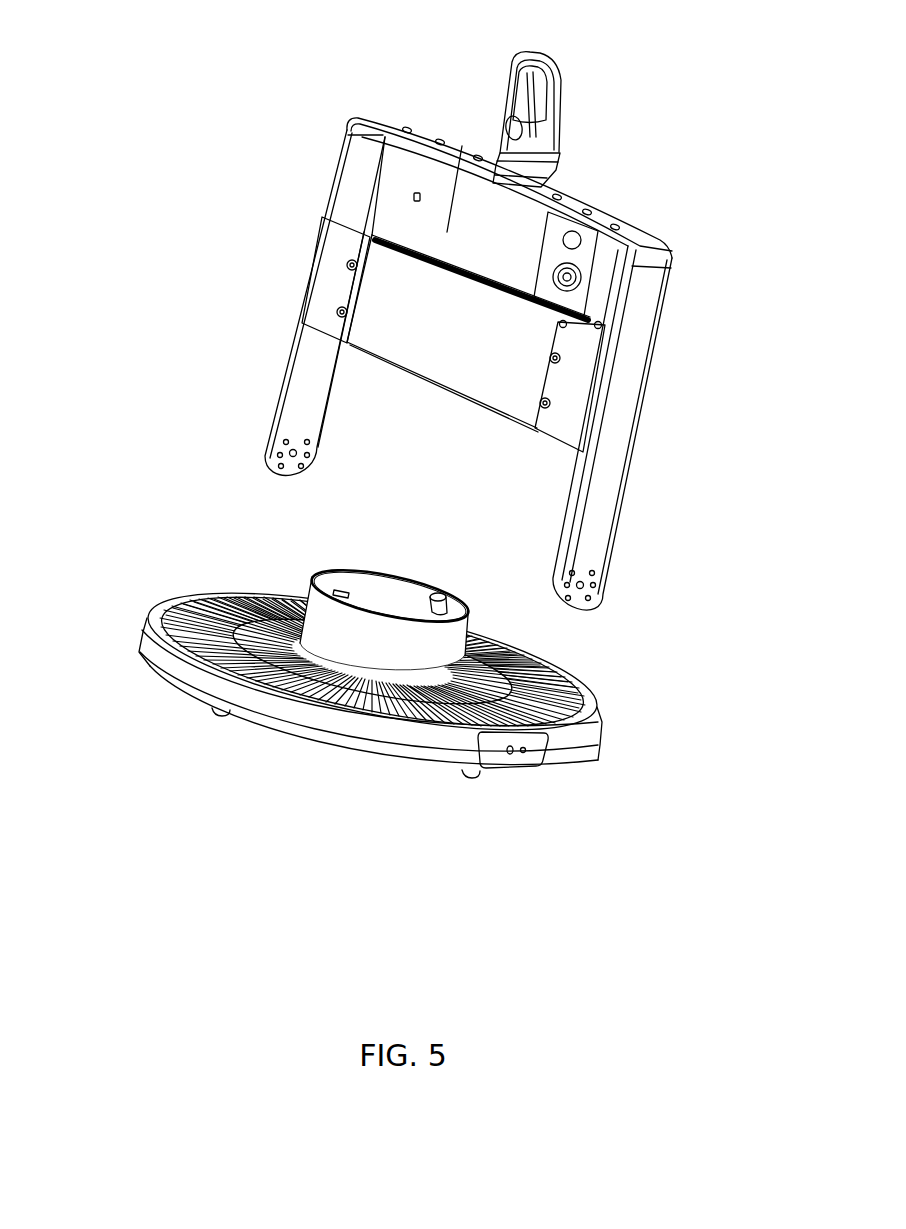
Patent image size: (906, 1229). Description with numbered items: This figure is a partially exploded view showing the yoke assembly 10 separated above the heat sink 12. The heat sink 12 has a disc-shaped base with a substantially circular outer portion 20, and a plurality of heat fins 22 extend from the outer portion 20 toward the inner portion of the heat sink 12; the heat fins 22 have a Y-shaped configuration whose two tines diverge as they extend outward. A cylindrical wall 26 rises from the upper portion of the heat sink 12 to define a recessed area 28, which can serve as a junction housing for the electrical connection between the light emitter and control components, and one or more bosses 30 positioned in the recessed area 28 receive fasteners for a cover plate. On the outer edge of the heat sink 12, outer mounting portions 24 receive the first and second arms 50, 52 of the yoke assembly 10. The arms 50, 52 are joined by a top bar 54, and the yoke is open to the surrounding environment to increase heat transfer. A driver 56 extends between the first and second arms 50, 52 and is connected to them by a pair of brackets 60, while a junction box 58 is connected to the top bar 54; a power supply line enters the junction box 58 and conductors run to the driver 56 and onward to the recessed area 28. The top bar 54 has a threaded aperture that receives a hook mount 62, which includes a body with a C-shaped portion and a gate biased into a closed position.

The yoke assembly 10 is at (303, 165).
The heat sink 12 is at (140, 673).
The outer portion 20 is at (145, 618).
The heat fins 22 is at (593, 700).
The outer mounting portions 24 is at (484, 758).
The cylindrical wall 26 is at (310, 597).
The recessed area 28 is at (390, 603).
The bosses 30 is at (440, 596).
The first arm 50 is at (593, 552).
The second arm 52 is at (282, 393).
The top bar 54 is at (601, 222).
The driver 56 is at (528, 360).
The junction box 58 is at (431, 178).
The brackets 60 is at (318, 292).
The hook mount 62 is at (569, 104).